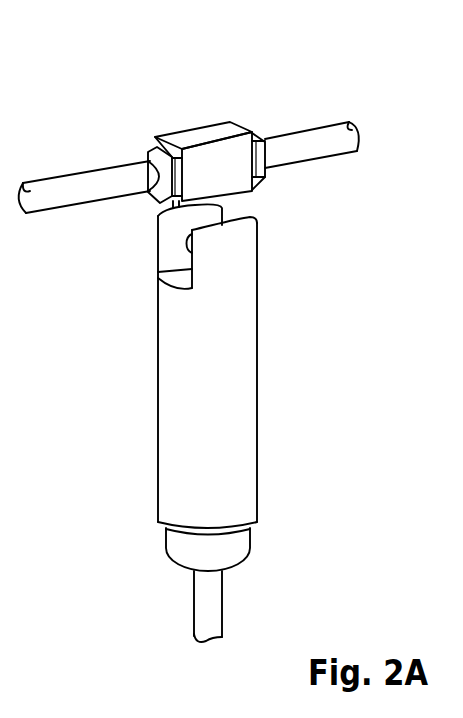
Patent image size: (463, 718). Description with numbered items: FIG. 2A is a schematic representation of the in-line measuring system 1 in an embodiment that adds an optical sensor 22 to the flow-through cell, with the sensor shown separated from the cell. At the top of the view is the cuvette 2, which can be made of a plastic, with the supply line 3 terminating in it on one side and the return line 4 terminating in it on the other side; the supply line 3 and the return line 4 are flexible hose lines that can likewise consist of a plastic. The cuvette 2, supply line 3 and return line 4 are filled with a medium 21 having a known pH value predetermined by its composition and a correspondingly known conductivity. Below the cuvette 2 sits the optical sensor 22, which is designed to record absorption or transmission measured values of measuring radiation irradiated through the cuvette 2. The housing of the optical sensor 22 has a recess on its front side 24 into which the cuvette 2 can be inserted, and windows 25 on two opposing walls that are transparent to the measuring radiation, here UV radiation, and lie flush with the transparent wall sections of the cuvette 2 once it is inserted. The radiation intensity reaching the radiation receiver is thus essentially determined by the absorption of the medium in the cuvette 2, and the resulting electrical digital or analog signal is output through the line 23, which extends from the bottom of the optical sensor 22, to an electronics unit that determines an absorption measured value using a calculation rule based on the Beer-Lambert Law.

The in-line measuring system 1 is at (146, 94).
The cuvette 2 is at (203, 133).
The medium 21 is at (232, 178).
The optical sensor 22 is at (218, 340).
The line 23 is at (208, 607).
The recess on front side 24 is at (173, 238).
The windows 25 is at (180, 253).
The supply line 3 is at (298, 143).
The return line 4 is at (92, 185).